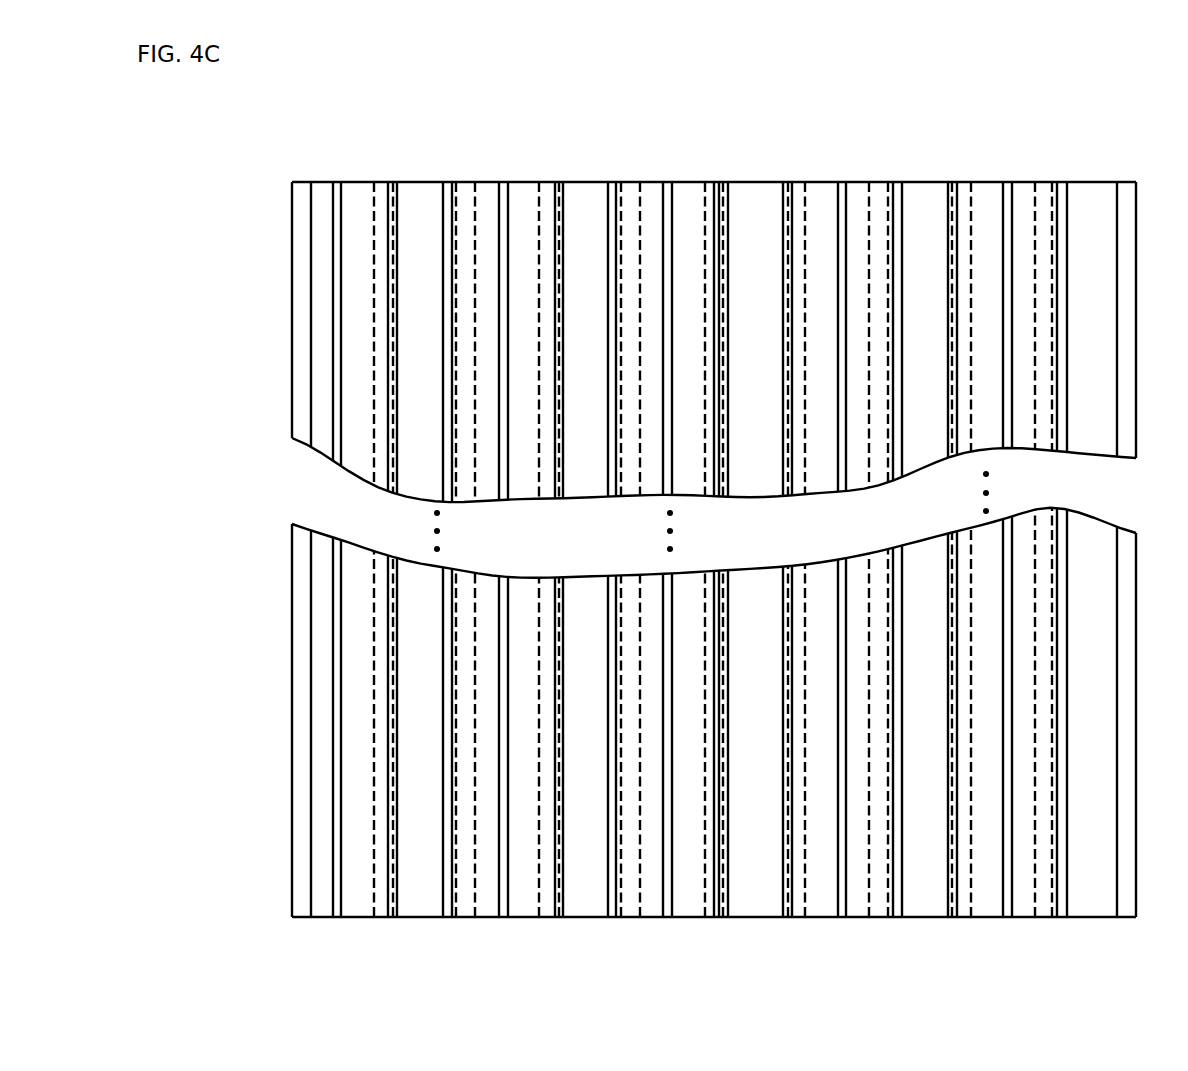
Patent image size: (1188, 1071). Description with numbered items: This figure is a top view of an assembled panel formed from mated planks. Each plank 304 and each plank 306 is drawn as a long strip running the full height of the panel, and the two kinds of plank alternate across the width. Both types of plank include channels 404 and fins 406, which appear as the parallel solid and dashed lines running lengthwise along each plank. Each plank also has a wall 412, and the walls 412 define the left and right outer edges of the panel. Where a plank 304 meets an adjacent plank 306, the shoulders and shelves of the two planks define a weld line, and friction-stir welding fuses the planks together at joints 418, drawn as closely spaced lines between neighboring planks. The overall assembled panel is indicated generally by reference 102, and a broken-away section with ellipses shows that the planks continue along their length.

The display device 102 is at (320, 96).
The plank 304 is at (612, 103).
The plank 306 is at (778, 103).
The channels 404 is at (987, 205).
The fins 406 is at (500, 205).
The wall 412 is at (299, 330).
The joints 418 is at (712, 205).